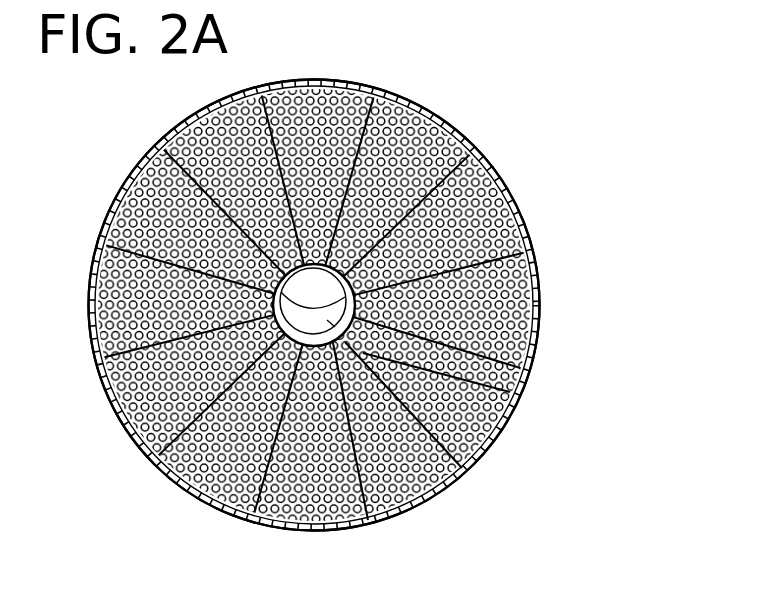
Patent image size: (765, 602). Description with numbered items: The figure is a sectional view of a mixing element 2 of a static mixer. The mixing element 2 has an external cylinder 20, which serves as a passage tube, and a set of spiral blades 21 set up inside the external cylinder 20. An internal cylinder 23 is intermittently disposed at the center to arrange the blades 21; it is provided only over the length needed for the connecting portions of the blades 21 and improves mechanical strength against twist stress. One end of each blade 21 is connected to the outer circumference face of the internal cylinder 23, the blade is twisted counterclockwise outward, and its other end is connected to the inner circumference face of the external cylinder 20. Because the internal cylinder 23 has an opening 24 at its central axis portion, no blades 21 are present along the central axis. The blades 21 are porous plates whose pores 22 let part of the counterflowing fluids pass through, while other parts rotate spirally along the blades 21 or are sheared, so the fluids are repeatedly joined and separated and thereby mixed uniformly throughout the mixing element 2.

The mixing element 2 is at (380, 279).
The external cylinder 20 is at (401, 108).
The blades 21 is at (438, 120).
The pores 22 is at (488, 162).
The internal cylinder 23 is at (539, 322).
The opening 24 is at (522, 393).